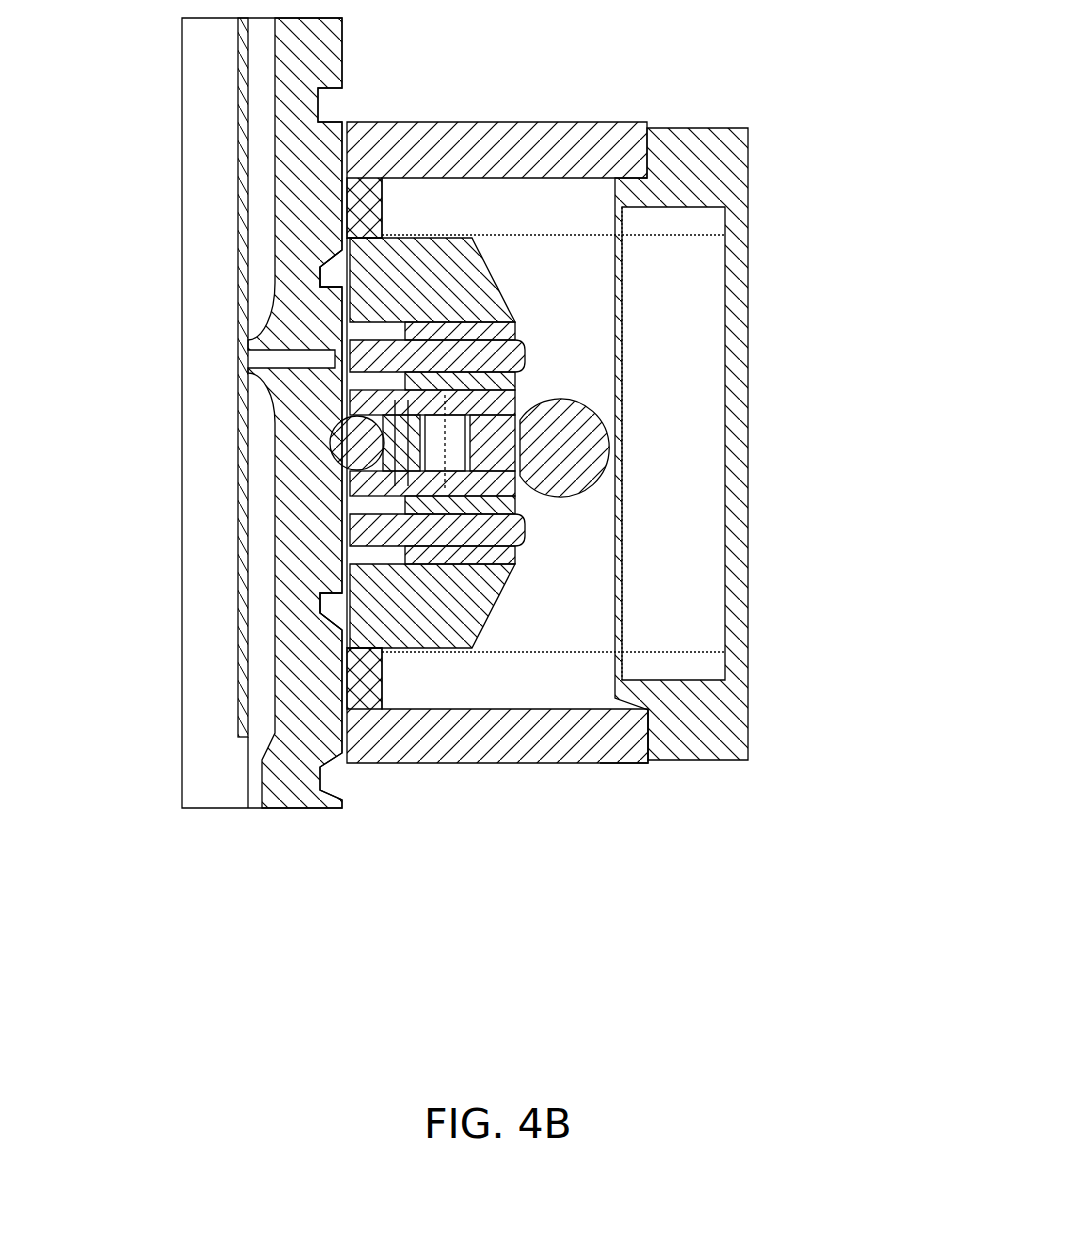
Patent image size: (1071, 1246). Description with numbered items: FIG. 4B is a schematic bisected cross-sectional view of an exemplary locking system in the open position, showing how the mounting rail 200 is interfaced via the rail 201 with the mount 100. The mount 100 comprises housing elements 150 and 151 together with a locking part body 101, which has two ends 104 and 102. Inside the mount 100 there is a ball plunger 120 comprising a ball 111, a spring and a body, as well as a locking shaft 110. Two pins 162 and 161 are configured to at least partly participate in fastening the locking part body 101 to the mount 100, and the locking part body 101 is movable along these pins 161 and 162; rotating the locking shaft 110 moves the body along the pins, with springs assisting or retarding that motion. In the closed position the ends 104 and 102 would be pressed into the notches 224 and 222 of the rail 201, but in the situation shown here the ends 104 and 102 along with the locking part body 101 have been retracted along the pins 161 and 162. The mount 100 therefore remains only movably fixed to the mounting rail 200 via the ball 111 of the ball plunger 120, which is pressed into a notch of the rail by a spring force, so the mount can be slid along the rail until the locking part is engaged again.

The mount 100 is at (492, 532).
The locking part body 101 is at (469, 628).
The end 102 is at (345, 627).
The end 104 is at (345, 294).
The locking shaft 110 is at (591, 463).
The ball 111 is at (345, 455).
The ball plunger 120 is at (410, 440).
The housing element 150 is at (752, 727).
The housing element 151 is at (627, 770).
The pin 161 is at (530, 345).
The pin 162 is at (531, 538).
The mounting rail 200 is at (194, 513).
The rail 201 is at (284, 770).
The notch 222 is at (318, 605).
The notch 224 is at (318, 277).